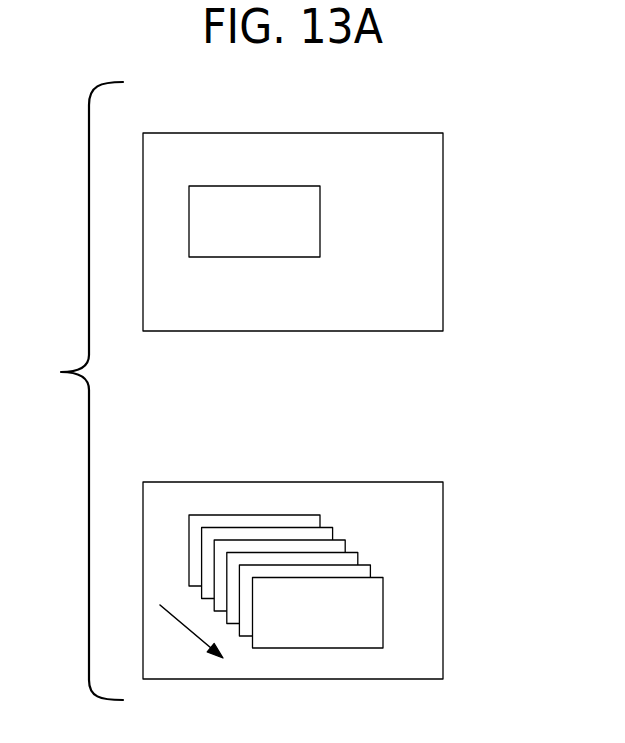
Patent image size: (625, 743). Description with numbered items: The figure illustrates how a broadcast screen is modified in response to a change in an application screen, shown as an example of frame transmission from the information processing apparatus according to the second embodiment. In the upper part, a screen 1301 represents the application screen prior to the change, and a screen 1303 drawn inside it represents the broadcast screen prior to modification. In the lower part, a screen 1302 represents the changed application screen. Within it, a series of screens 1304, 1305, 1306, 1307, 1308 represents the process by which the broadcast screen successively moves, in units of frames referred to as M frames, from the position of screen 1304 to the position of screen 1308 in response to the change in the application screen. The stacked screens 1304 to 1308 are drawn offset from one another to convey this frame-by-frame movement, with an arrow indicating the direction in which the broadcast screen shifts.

The screen 1301 is at (242, 111).
The screen 1303 is at (293, 186).
The screen 1302 is at (180, 482).
The screen 1304 is at (295, 515).
The screen 1305 is at (333, 528).
The screen 1306 is at (345, 540).
The screen 1307 is at (358, 553).
The screen 1308 is at (380, 578).